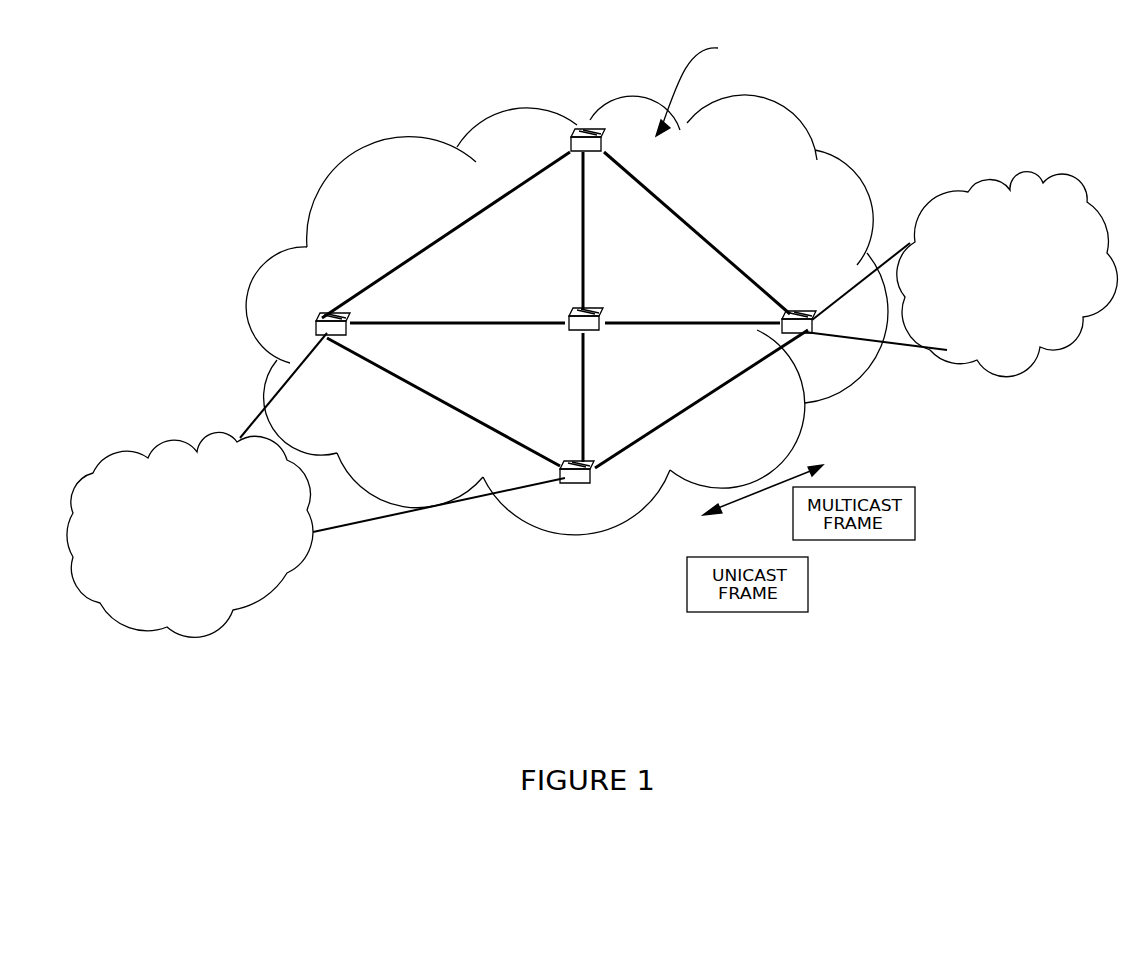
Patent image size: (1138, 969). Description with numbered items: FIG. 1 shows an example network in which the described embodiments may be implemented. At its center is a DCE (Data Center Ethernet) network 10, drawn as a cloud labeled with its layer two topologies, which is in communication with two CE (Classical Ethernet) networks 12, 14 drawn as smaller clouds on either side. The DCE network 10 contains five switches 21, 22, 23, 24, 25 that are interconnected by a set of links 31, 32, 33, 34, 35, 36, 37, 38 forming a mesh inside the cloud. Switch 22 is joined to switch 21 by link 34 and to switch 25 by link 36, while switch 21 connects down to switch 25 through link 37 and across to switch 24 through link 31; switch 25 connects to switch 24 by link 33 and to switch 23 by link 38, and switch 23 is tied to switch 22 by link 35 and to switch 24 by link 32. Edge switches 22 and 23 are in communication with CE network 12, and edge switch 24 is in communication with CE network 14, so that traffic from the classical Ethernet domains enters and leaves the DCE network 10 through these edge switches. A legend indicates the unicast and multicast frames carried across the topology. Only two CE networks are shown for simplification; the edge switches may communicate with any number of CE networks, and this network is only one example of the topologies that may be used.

The DCE network 10 is at (420, 133).
The CE network 12 is at (158, 440).
The CE network 14 is at (1032, 180).
The switch 21 is at (592, 128).
The edge switch 22 is at (322, 313).
The edge switch 23 is at (604, 462).
The edge switch 24 is at (813, 310).
The switch 25 is at (573, 308).
The link 31 is at (687, 217).
The link 32 is at (713, 387).
The link 33 is at (643, 320).
The link 34 is at (488, 203).
The link 35 is at (432, 392).
The link 36 is at (445, 320).
The link 37 is at (584, 217).
The link 38 is at (583, 360).